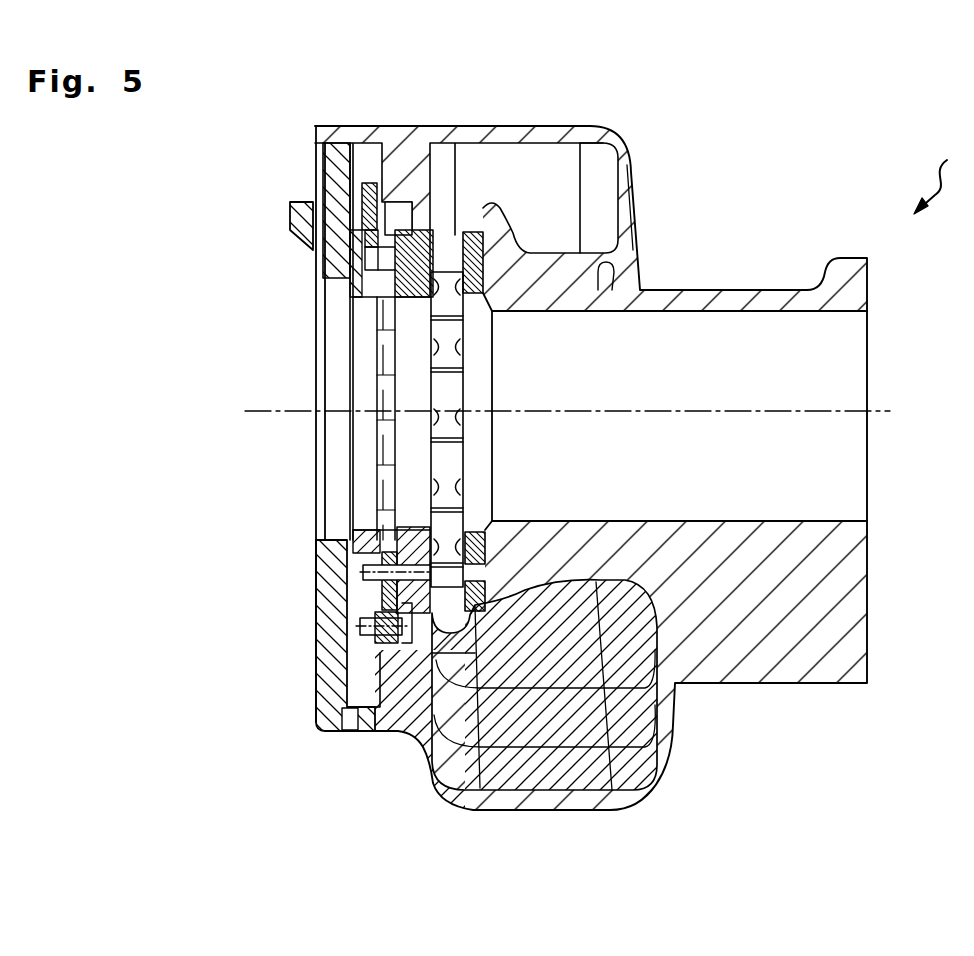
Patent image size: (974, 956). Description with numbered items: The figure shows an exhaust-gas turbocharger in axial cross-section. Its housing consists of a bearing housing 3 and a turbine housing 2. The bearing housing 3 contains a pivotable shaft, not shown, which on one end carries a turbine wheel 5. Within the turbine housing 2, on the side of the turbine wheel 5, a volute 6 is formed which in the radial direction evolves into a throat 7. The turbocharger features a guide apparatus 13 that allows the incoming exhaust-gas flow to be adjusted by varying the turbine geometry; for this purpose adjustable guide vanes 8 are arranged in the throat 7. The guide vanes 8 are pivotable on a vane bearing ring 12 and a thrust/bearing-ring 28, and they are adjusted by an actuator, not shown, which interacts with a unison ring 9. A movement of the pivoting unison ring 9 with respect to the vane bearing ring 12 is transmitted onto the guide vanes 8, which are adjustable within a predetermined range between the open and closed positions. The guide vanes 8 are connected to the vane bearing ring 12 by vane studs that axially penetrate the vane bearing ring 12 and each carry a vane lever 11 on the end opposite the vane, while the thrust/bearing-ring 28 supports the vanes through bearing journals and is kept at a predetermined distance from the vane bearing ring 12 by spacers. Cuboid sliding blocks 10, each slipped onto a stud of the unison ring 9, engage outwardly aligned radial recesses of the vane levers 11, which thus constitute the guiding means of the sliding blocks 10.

The turbine housing 2 is at (400, 146).
The bearing housing 3 is at (325, 147).
The turbine wheel 5 is at (475, 385).
The volute 6 is at (561, 192).
The throat 7 is at (447, 257).
The guide vanes 8 is at (413, 645).
The unison ring 9 is at (367, 203).
The sliding block 10 is at (388, 645).
The vane lever 11 is at (390, 222).
The vane bearing ring 12 is at (408, 268).
The guide apparatus 13 is at (394, 572).
The thrust/bearing-ring 28 is at (475, 255).